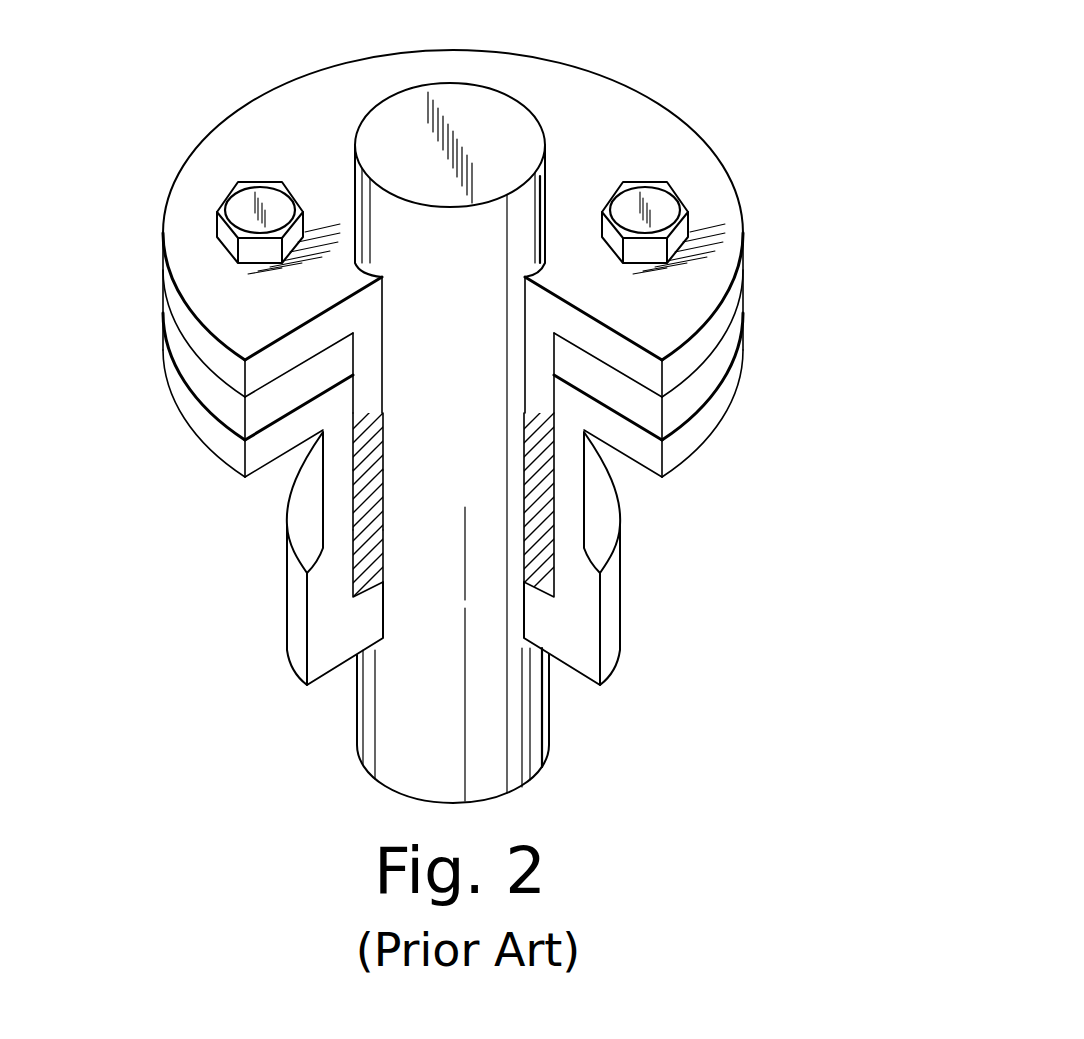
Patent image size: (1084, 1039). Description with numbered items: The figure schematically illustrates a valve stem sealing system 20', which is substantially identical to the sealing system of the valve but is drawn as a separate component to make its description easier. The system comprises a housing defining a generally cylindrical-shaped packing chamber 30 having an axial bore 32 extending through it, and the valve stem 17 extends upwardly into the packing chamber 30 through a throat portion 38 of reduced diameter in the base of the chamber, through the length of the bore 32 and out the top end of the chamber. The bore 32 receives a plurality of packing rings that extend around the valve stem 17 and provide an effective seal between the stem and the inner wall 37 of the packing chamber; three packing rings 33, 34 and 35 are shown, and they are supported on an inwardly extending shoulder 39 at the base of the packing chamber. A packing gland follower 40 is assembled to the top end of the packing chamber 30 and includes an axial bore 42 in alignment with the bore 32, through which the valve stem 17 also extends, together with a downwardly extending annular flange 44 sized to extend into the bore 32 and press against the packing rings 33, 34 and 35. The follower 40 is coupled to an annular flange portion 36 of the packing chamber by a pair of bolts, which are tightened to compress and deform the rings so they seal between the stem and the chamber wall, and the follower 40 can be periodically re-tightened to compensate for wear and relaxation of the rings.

The valve stem sealing system 20' is at (512, 401).
The packing gland follower 40 is at (302, 93).
The axial bore 42 is at (370, 403).
The annular flange portion 36 is at (200, 373).
The valve stem 17 is at (490, 232).
The packing ring 33 is at (360, 453).
The packing ring 34 is at (360, 505).
The packing ring 35 is at (362, 557).
The axial bore 32 is at (556, 408).
The packing chamber 30 is at (300, 527).
The inwardly extending shoulder 39 is at (368, 583).
The annular flange 44 is at (313, 437).
The inner wall 37 is at (523, 603).
The throat portion 38 is at (548, 656).